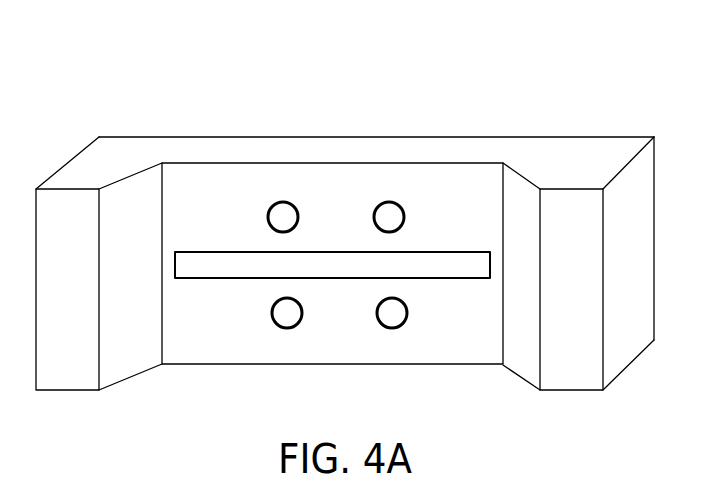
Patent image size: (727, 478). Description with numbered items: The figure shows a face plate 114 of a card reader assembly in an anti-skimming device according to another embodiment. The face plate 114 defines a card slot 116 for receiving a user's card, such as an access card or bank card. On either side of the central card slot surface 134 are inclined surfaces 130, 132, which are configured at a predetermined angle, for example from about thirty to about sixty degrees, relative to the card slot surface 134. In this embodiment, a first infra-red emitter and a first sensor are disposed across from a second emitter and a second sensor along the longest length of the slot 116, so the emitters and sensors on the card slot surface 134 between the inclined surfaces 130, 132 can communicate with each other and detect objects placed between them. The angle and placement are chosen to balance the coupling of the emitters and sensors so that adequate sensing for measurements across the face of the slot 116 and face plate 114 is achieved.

The face plate 114 is at (363, 199).
The card slot 116 is at (198, 263).
The inclined surface 130 is at (520, 195).
The inclined surface 132 is at (122, 200).
The card slot surface 134 is at (330, 186).